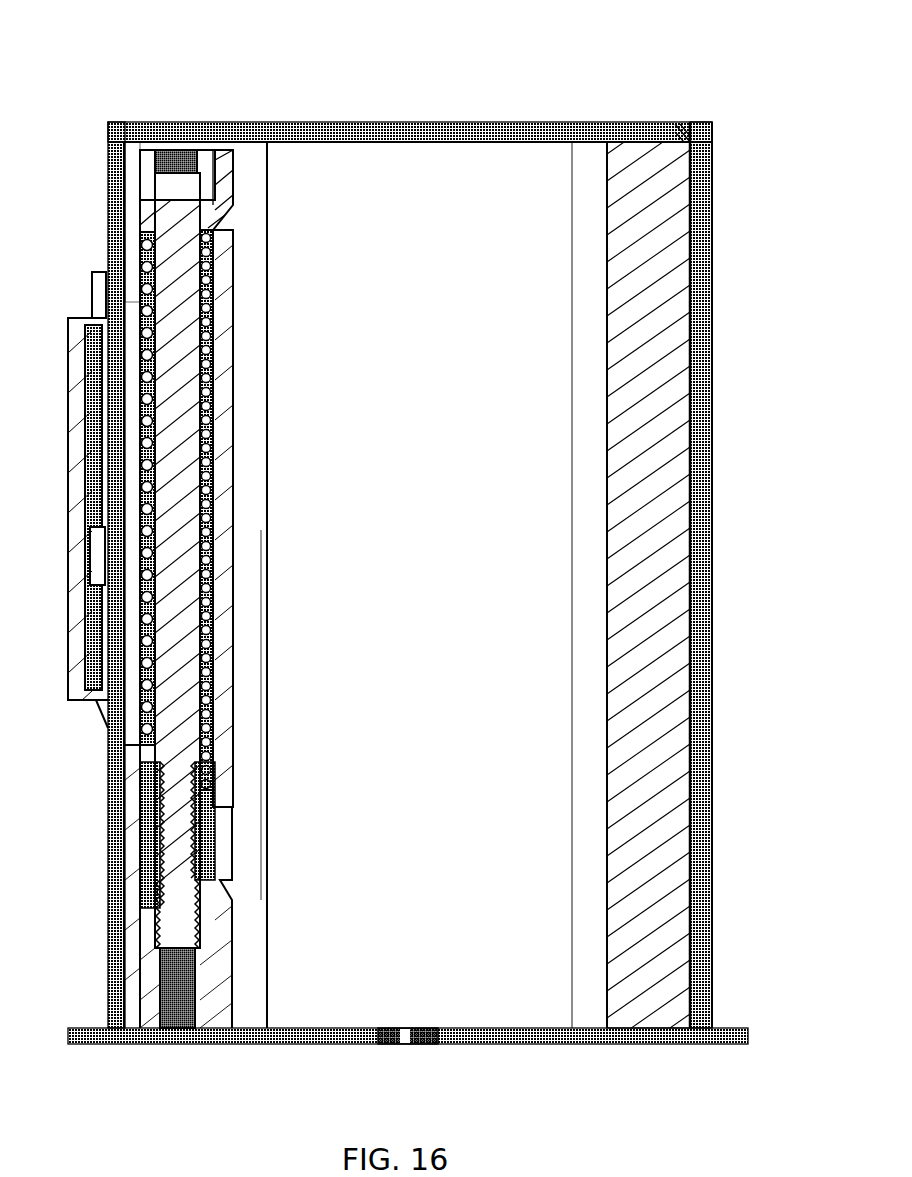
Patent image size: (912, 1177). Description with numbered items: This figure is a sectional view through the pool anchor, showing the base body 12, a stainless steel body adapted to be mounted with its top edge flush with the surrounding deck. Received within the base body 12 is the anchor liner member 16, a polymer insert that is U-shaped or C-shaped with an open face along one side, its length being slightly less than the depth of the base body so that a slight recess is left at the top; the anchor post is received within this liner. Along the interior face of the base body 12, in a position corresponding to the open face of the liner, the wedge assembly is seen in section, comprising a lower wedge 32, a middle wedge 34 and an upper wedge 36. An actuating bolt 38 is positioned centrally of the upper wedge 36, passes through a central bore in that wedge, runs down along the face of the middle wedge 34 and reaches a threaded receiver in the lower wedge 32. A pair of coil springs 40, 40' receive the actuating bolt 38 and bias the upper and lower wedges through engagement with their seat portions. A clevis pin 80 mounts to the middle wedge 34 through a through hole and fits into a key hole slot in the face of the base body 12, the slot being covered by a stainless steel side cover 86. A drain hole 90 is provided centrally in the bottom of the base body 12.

The base body 12 is at (700, 931).
The anchor liner member 16 is at (672, 813).
The lower wedge 32 is at (142, 929).
The middle wedge 34 is at (132, 488).
The upper wedge 36 is at (138, 218).
The actuating bolt 38 is at (170, 195).
The coil spring 40 is at (134, 518).
The coil spring 40' is at (135, 835).
The clevis pin 80 is at (97, 550).
The side cover 86 is at (97, 270).
The drain hole 90 is at (415, 1048).